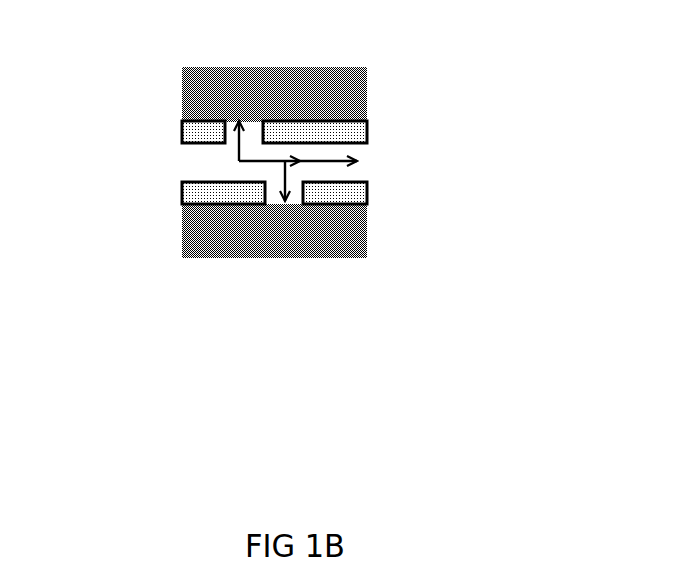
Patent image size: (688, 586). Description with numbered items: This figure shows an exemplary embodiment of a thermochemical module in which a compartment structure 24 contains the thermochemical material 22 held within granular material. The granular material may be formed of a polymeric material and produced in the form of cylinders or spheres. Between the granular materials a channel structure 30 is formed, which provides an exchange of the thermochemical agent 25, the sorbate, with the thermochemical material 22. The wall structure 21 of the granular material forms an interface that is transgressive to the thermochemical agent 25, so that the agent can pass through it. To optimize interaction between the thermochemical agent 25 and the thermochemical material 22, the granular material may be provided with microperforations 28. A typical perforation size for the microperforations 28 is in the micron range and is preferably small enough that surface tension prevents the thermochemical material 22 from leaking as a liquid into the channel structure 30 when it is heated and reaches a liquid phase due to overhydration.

The wall structure 21 is at (340, 142).
The thermochemical material 22 is at (274, 67).
The compartment structure 24 is at (357, 303).
The thermochemical agent 25 is at (315, 161).
The microperforations 28 is at (163, 230).
The channel structure 30 is at (120, 102).